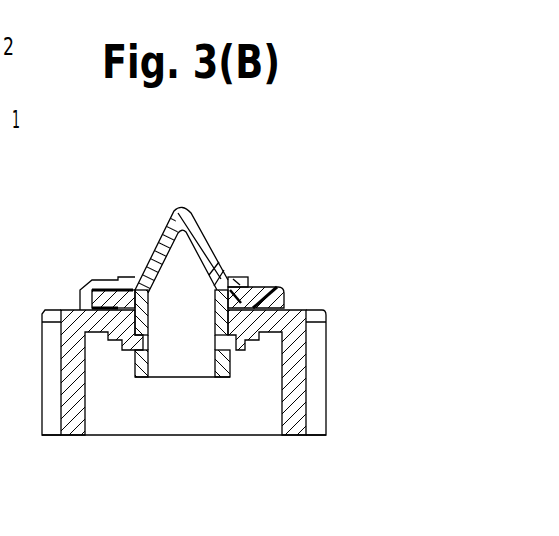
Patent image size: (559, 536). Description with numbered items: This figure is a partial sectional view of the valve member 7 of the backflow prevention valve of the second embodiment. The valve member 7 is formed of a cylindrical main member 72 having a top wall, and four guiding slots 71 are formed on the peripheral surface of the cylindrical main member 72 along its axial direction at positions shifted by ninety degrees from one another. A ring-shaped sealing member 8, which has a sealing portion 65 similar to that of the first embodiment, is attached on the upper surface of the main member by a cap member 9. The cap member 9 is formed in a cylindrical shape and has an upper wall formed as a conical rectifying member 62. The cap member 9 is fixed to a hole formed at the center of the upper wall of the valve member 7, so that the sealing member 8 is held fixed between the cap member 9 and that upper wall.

The valve member 7 is at (313, 283).
The guiding slot 71 is at (320, 358).
The cylindrical main member 72 is at (292, 422).
The conical rectifying member 62 is at (175, 208).
The sealing portion 65 is at (85, 281).
The sealing member 8 is at (277, 284).
The cap member 9 is at (243, 277).